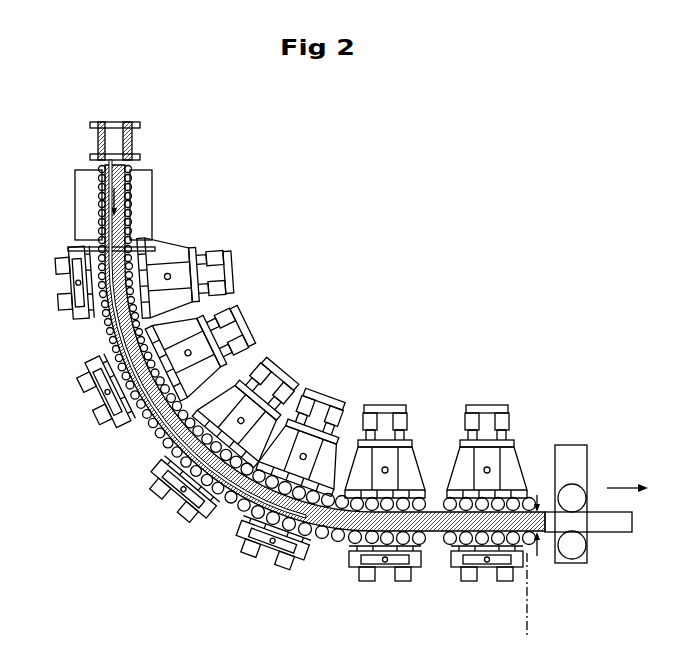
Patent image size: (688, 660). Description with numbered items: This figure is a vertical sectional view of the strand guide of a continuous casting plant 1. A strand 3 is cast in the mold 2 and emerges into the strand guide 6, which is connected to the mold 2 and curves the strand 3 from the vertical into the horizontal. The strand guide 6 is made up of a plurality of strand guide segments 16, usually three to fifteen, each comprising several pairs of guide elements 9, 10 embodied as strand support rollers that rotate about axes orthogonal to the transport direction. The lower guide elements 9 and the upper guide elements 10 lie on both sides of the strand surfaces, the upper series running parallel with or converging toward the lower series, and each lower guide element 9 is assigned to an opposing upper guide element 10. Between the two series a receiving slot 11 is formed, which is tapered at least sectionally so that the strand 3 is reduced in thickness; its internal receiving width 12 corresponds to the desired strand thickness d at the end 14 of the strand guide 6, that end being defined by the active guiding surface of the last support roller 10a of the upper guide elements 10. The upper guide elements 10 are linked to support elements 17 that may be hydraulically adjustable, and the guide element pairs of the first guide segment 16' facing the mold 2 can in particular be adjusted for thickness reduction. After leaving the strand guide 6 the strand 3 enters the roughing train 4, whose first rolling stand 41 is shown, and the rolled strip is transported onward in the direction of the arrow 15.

The continuous casting plant 1 is at (372, 157).
The mold 2 is at (138, 142).
The strand 3 is at (101, 152).
The roughing train 4 is at (572, 456).
The strand guide 6 is at (348, 272).
The lower guide elements 9 is at (100, 194).
The upper guide elements 10 is at (122, 199).
The last support roller 10a is at (528, 497).
The receiving slot 11 is at (140, 181).
The internal receiving width 12 is at (110, 244).
The end of the strand guide 14 is at (527, 610).
The arrow 15 is at (607, 488).
The strand guide segments 16 is at (332, 343).
The first guide segment 16' is at (104, 193).
The support elements 17 is at (165, 246).
The rolling stand 41 is at (580, 546).
The strand thickness d is at (537, 494).